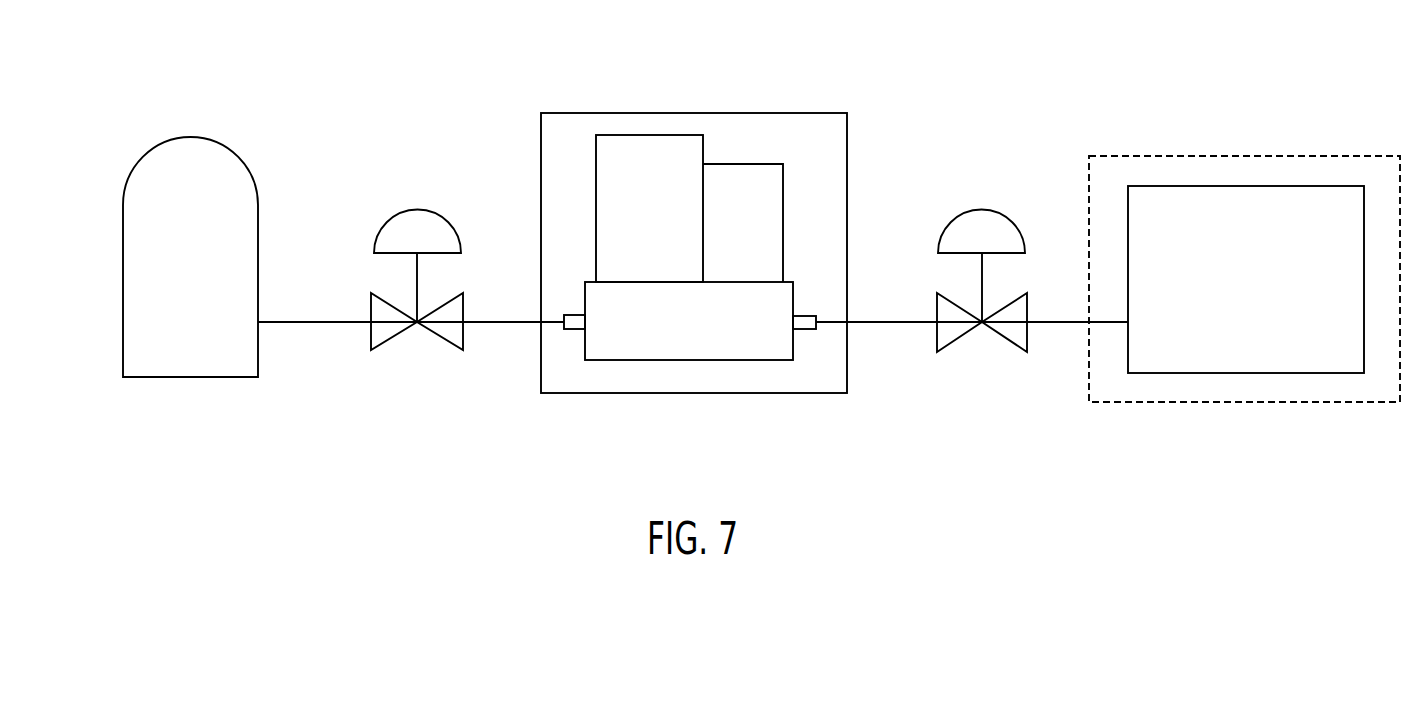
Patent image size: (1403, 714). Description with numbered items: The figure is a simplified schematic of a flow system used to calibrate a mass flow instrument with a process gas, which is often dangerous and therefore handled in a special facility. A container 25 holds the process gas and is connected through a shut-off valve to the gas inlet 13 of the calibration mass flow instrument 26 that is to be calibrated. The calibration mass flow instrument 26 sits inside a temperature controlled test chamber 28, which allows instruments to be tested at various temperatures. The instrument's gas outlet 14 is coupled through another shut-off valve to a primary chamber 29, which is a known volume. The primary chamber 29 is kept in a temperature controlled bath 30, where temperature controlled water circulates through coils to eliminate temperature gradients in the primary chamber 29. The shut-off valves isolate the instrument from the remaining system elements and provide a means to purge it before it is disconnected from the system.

The gas inlet 13 is at (573, 331).
The gas outlet 14 is at (805, 331).
The container 25 is at (247, 378).
The calibration mass flow instrument 26 is at (650, 135).
The temperature controlled test chamber 28 is at (762, 114).
The primary chamber 29 is at (1192, 186).
The temperature controlled bath 30 is at (1100, 404).